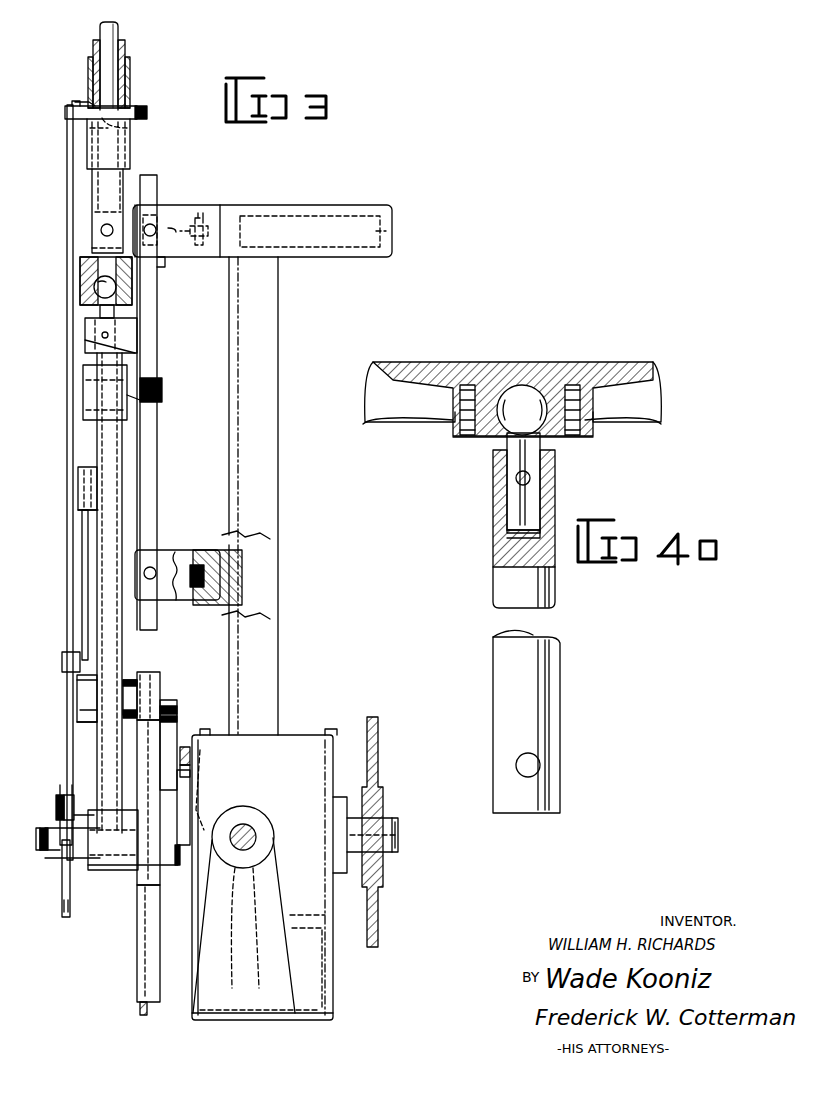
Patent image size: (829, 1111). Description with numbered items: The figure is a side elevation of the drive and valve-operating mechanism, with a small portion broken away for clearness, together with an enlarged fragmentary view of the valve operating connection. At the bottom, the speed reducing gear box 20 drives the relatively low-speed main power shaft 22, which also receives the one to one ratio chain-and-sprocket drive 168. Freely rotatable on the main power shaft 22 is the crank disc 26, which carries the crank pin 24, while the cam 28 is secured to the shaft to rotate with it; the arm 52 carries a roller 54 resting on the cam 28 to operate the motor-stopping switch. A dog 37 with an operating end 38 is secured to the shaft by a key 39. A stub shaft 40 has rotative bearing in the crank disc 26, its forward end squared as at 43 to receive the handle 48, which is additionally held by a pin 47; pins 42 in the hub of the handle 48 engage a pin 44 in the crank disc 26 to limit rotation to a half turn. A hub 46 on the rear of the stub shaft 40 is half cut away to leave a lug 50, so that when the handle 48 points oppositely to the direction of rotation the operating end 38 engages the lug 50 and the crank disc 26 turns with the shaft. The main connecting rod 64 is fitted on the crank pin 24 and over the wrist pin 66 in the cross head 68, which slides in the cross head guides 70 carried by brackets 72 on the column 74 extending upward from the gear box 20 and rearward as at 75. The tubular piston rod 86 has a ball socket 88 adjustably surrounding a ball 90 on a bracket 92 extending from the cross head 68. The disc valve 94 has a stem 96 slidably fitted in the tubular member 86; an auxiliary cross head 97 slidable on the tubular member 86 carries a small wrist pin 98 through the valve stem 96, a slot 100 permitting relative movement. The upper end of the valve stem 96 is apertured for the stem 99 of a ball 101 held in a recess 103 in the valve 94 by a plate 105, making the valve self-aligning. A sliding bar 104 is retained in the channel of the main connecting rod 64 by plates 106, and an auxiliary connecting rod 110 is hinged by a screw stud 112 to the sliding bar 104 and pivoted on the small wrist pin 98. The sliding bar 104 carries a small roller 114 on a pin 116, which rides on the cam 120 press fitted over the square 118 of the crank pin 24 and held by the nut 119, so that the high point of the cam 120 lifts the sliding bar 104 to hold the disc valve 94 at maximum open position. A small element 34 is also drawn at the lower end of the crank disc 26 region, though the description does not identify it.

In FIG. 3, the speed reducing gear box 20 is at (301, 799).
In FIG. 3, the main power shaft 22 is at (398, 820).
In FIG. 3, the crank pin 24 is at (38, 838).
In FIG. 3, the crank disc 26 is at (137, 958).
In FIG. 3, the cam 28 is at (185, 870).
In FIG. 3, the screw 34 is at (138, 1011).
In FIG. 3, the dog 37 is at (173, 782).
In FIG. 3, the operating end 38 is at (174, 709).
In FIG. 3, the key 39 is at (205, 802).
In FIG. 3, the stub shaft 40 is at (172, 688).
In FIG. 3, the pins 42 is at (130, 680).
In FIG. 3, the squared end 43 is at (86, 716).
In FIG. 3, the pin 44 is at (162, 670).
In FIG. 3, the hub 46 is at (158, 680).
In FIG. 3, the pin 47 is at (52, 724).
In FIG. 3, the handle 48 is at (86, 681).
In FIG. 3, the lug 50 is at (174, 704).
In FIG. 3, the arm 52 is at (184, 747).
In FIG. 3, the roller 54 is at (185, 757).
In FIG. 3, the main connecting rod 64 is at (102, 617).
In FIG. 3, the wrist pin 66 is at (87, 400).
In FIG. 3, the cross head 68 is at (146, 328).
In FIG. 3, the cross head guides 70 is at (151, 310).
In FIG. 3, the brackets 72 is at (151, 210).
In FIG. 3, the column 74 is at (273, 407).
In FIG. 3, the rearward extension 75 is at (360, 205).
In FIG. 3, the tubular piston rod 86 is at (124, 48).
In FIG. 3, the ball socket 88 is at (80, 292).
In FIG. 3, the ball 90 is at (100, 288).
In FIG. 3, the bracket 92 is at (85, 340).
In FIG. 4a, the disc valve 94 is at (426, 362).
In FIG. 3, the valve stem 96 is at (118, 32).
In FIG. 4a, the valve stem 96 is at (558, 583).
In FIG. 3, the auxiliary cross head 97 is at (128, 88).
In FIG. 3, the small wrist pin 98 is at (74, 104).
In FIG. 4a, the stem 99 is at (515, 503).
In FIG. 3, the slot 100 is at (128, 75).
In FIG. 4a, the ball 101 is at (505, 420).
In FIG. 4a, the recess 103 is at (521, 385).
In FIG. 3, the sliding bar 104 is at (82, 548).
In FIG. 4a, the plate 105 is at (447, 435).
In FIG. 3, the plates 106 is at (82, 490).
In FIG. 3, the auxiliary connecting rod 110 is at (82, 512).
In FIG. 3, the screw stud 112 is at (64, 658).
In FIG. 3, the roller 114 is at (70, 784).
In FIG. 3, the pin 116 is at (56, 800).
In FIG. 3, the square 118 is at (55, 826).
In FIG. 3, the nut 119 is at (52, 855).
In FIG. 3, the cam 120 is at (62, 868).
In FIG. 3, the chain-and-sprocket drive 168 is at (379, 754).